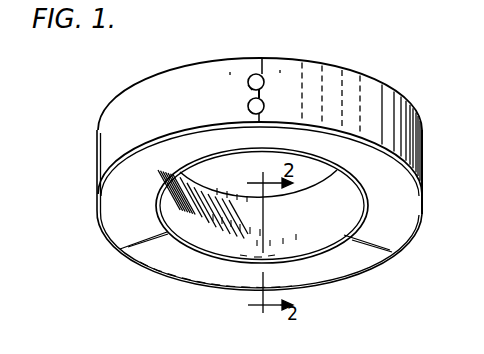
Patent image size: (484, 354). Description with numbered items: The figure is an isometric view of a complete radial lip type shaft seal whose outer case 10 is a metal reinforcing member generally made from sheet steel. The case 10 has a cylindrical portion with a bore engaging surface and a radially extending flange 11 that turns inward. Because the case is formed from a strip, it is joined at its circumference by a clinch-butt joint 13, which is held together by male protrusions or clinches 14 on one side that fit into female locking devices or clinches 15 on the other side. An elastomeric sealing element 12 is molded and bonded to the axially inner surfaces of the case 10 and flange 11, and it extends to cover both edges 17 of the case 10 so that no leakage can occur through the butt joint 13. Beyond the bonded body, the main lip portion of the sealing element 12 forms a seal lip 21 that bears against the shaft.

The outer case 10 is at (379, 121).
The radially extending flange 11 is at (392, 200).
The sealing element 12 is at (212, 214).
The clinch-butt joint 13 is at (258, 74).
The male protrusions 14 is at (263, 84).
The female locking devices 15 is at (253, 91).
The edges of the case 17 is at (309, 64).
The seal lip 21 is at (292, 205).